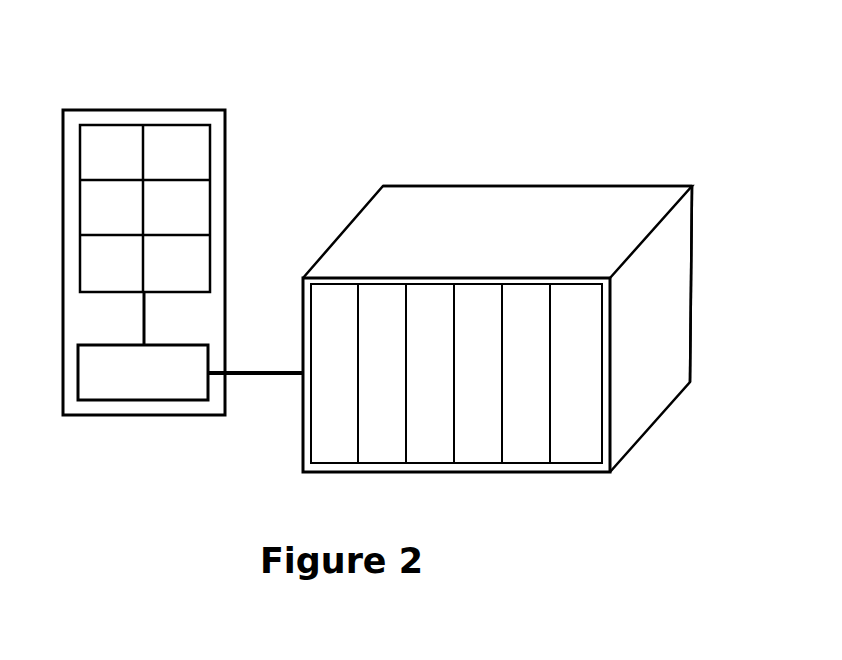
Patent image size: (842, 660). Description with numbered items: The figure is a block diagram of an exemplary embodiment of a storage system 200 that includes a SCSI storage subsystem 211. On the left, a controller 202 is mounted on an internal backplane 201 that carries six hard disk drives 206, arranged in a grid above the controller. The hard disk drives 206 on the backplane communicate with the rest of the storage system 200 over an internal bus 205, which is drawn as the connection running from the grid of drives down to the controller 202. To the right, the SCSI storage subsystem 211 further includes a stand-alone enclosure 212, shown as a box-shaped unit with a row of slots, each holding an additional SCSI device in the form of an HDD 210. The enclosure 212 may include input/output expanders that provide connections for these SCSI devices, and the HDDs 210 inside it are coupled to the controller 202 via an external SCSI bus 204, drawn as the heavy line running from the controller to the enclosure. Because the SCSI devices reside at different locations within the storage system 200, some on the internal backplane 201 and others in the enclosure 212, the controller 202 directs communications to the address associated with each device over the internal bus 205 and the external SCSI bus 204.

The storage system 200 is at (414, 129).
The internal backplane 201 is at (128, 109).
The controller 202 is at (124, 383).
The SCSI bus 204 is at (267, 378).
The internal bus 205 is at (140, 312).
The hard disk drives 206 is at (93, 168).
The HDDs 210 is at (313, 379).
The SCSI storage subsystem 211 is at (652, 153).
The stand-alone enclosure 212 is at (588, 185).